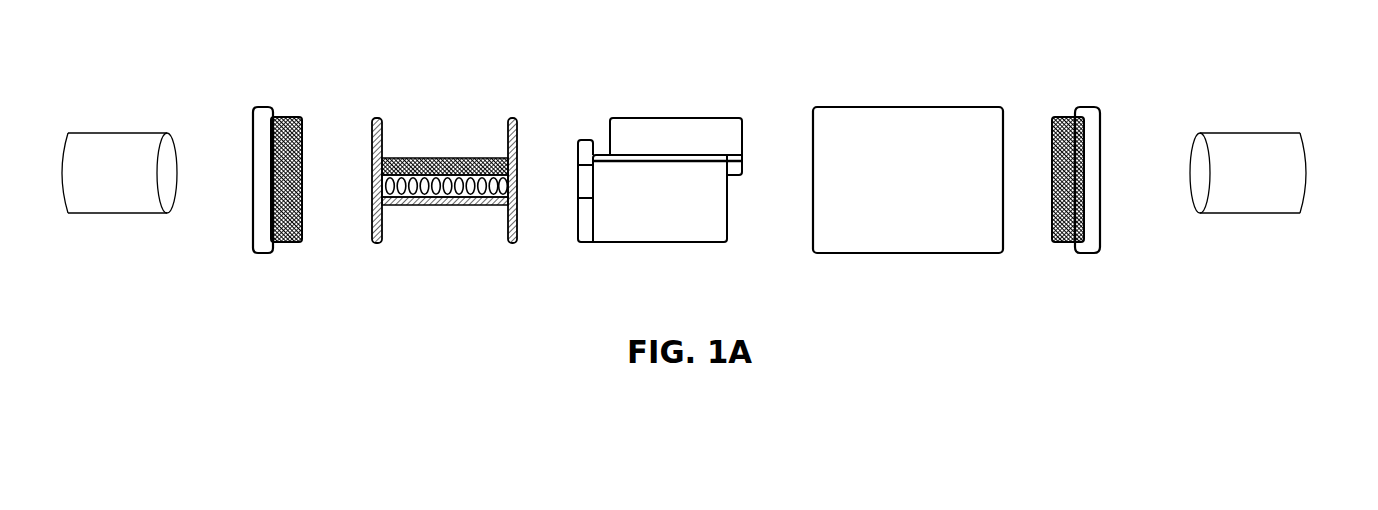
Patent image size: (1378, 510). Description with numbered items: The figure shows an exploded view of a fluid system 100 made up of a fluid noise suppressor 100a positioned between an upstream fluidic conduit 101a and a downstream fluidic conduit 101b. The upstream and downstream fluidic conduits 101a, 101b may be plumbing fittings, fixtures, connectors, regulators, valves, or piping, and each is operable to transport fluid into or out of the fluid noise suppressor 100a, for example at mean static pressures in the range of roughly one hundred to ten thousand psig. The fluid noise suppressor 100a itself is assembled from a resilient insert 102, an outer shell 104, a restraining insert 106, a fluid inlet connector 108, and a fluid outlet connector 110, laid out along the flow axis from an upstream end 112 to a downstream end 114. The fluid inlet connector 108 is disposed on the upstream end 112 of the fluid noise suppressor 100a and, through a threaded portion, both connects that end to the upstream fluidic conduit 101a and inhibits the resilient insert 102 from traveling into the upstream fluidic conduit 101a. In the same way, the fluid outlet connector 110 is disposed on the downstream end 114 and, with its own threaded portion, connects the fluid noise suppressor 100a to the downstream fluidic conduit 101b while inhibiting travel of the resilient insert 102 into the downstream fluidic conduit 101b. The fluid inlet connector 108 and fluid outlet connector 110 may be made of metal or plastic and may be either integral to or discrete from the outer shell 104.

The fluid system 100 is at (1197, 72).
The fluid noise suppressor 100a is at (982, 263).
The upstream fluidic conduit 101a is at (108, 135).
The downstream fluidic conduit 101b is at (1280, 133).
The resilient insert 102 is at (699, 119).
The outer shell 104 is at (921, 99).
The restraining insert 106 is at (468, 150).
The fluid inlet connector 108 is at (302, 131).
The fluid outlet connector 110 is at (1061, 114).
The upstream end 112 is at (258, 104).
The downstream end 114 is at (1086, 107).